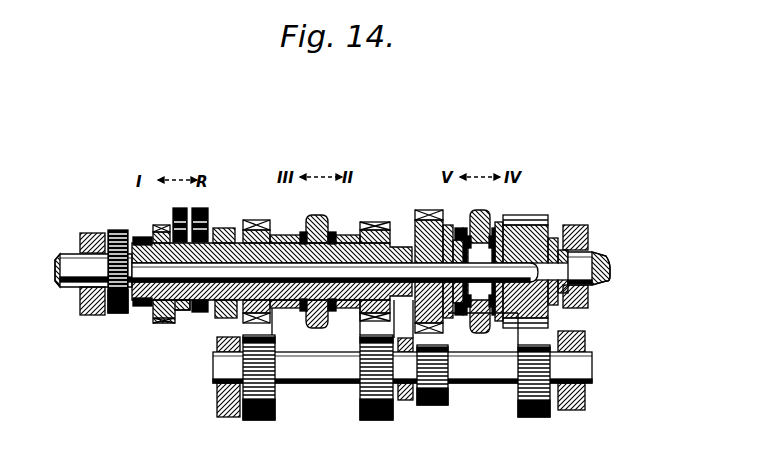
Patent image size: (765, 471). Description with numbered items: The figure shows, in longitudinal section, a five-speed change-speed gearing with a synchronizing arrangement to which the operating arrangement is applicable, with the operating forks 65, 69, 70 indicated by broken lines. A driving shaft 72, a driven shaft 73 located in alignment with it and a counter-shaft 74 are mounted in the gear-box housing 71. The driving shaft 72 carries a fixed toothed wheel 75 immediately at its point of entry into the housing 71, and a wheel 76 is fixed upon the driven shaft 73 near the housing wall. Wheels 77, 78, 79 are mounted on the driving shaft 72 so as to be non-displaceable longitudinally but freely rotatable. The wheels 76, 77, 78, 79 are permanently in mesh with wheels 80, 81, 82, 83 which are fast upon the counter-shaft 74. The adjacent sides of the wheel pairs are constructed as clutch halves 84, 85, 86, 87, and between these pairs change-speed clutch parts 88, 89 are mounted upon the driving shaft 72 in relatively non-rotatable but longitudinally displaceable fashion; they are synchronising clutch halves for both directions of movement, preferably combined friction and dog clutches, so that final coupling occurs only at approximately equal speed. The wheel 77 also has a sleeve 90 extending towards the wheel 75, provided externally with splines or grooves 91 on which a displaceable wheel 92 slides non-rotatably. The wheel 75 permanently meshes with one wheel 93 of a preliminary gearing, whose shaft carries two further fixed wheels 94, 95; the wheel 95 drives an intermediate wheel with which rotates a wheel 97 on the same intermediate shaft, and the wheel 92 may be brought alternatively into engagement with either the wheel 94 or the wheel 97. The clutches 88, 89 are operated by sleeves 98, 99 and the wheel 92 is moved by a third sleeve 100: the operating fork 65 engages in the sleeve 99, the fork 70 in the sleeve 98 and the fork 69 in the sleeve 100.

The operating fork 65 is at (479, 208).
The operating fork 69 is at (175, 208).
The operating fork 70 is at (315, 213).
The gear-box housing 71 is at (90, 317).
The driving shaft 72 is at (67, 288).
The driven shaft 73 is at (610, 276).
The counter-shaft 74 is at (326, 386).
The fixed toothed wheel 75 is at (115, 315).
The wheel 76 is at (549, 222).
The wheel 77 is at (260, 218).
The wheel 78 is at (383, 222).
The wheel 79 is at (423, 206).
The wheel 80 is at (262, 415).
The wheel 81 is at (378, 413).
The wheel 82 is at (432, 406).
The wheel 83 is at (535, 416).
The clutch half 84 is at (300, 238).
The clutch half 85 is at (347, 237).
The clutch half 86 is at (463, 230).
The clutch half 87 is at (513, 218).
The change-speed clutch part 88 is at (308, 312).
The change-speed clutch part 89 is at (506, 322).
The sleeve 90 is at (213, 313).
The splines or grooves 91 is at (187, 312).
The displaceable wheel 92 is at (162, 323).
The wheel of preliminary gearing 93 is at (118, 230).
The fixed wheel 94 is at (140, 237).
The fixed wheel 95 is at (214, 232).
The wheel 97 is at (209, 240).
The sleeve 98 is at (330, 214).
The sleeve 99 is at (505, 220).
The sleeve 100 is at (168, 222).